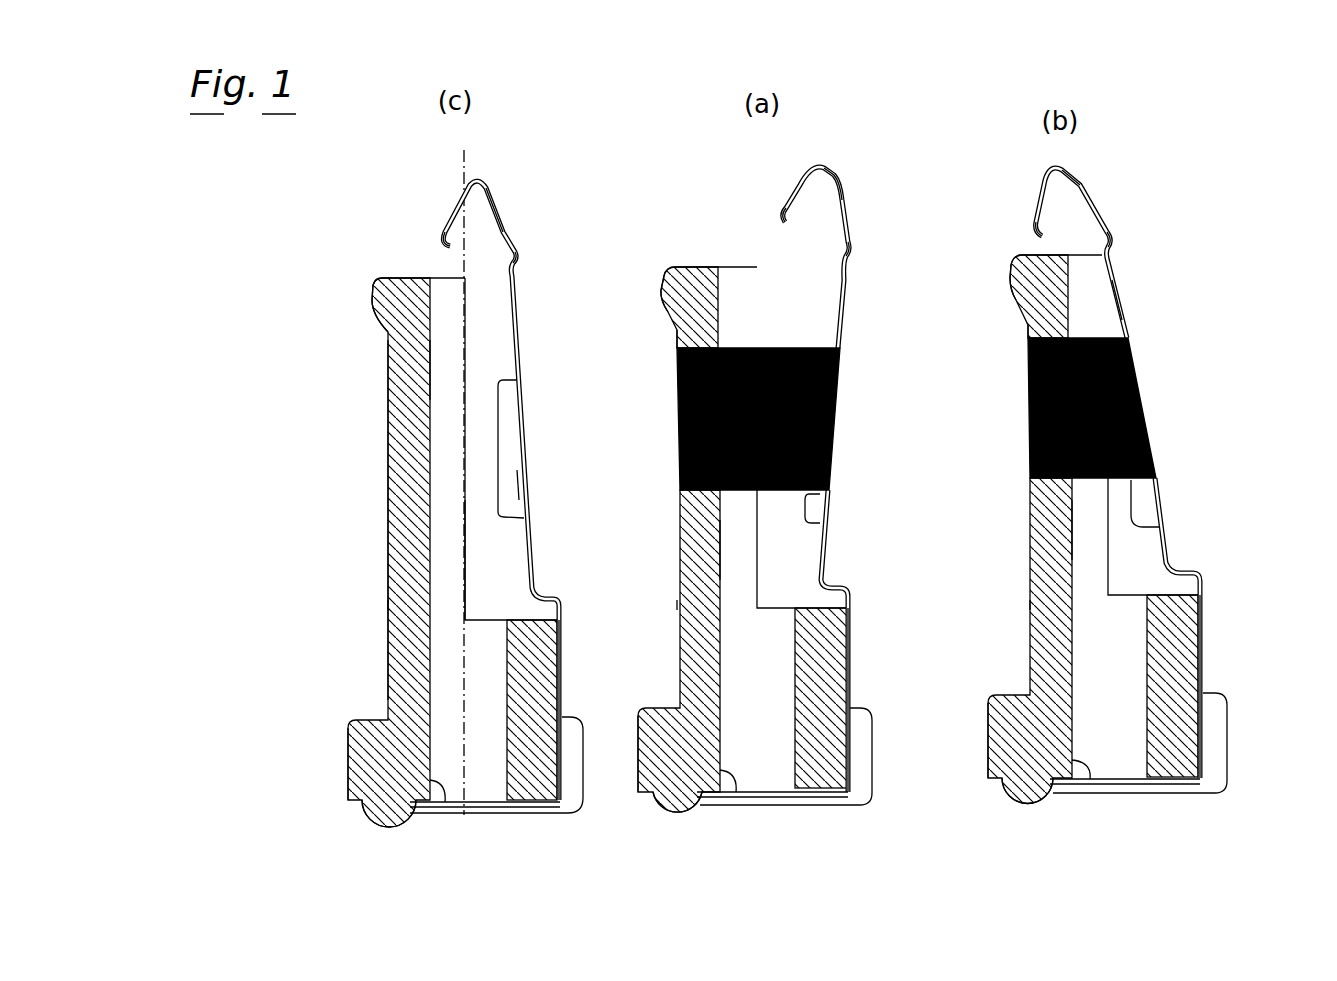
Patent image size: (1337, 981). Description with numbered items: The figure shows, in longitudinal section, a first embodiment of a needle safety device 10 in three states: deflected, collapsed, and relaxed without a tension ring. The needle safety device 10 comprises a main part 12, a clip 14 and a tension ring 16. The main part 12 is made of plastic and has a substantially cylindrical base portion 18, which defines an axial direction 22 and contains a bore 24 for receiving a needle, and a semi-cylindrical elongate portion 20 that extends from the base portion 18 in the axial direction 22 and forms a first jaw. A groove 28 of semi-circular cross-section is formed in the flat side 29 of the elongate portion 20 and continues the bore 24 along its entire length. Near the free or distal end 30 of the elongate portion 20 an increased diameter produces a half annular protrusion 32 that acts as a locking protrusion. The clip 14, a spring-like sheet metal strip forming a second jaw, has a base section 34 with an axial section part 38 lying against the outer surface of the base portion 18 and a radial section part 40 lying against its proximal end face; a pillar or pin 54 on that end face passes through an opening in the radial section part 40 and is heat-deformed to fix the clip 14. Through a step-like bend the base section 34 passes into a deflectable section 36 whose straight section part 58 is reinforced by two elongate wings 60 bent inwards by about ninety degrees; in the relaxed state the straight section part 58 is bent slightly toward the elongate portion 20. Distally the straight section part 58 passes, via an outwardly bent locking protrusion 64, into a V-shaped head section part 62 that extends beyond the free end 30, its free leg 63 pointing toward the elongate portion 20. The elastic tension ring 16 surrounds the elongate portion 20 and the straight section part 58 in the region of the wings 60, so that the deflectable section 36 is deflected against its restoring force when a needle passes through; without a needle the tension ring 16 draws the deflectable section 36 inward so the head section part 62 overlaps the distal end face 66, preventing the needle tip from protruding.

The needle safety device 10 is at (330, 607).
The main part 12 is at (388, 680).
The clip 14 is at (518, 322).
The tension ring 16 is at (842, 416).
The base portion 18 is at (348, 770).
The elongate portion 20 is at (388, 474).
The axial direction 22 is at (462, 160).
The bore 24 is at (440, 808).
The groove 28 is at (430, 374).
The flat side 29 is at (467, 556).
The free or distal end 30 is at (404, 268).
The half annular protrusion 32 is at (370, 300).
The base section 34 is at (562, 674).
The deflectable section 36 is at (518, 382).
The axial section part 38 is at (562, 640).
The radial section part 40 is at (568, 812).
The pillar or pin 54 is at (392, 832).
The straight section part 58 is at (525, 520).
The elongate wings 60 is at (518, 484).
The head section part 62 is at (502, 207).
The free leg 63 is at (446, 214).
The protrusion 64 is at (520, 256).
The distal end face 66 is at (398, 276).